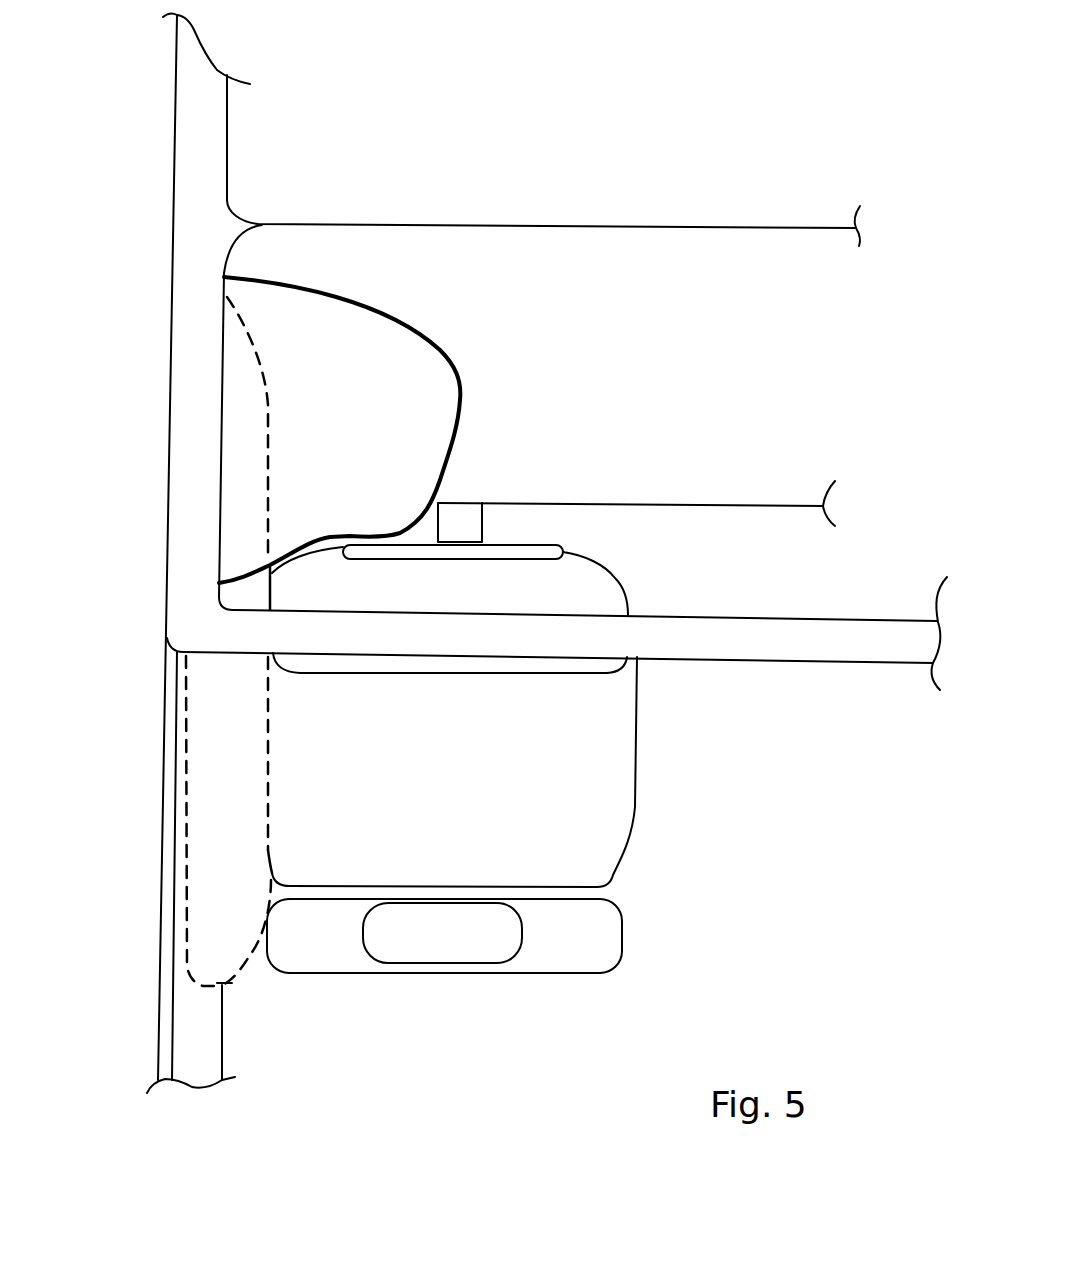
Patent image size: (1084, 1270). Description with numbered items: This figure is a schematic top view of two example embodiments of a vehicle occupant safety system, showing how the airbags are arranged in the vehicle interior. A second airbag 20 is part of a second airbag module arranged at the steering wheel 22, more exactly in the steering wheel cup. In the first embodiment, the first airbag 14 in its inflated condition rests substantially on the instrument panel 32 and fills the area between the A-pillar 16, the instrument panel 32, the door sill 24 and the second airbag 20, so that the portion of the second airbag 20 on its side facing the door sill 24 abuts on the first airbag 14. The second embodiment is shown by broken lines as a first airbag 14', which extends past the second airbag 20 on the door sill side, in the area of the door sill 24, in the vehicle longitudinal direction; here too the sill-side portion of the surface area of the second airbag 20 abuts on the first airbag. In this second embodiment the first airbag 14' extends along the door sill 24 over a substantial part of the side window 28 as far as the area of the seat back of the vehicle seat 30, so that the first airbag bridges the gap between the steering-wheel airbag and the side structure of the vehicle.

The first airbag 14 is at (373, 430).
The first airbag 14' is at (271, 678).
The A-pillar 16 is at (192, 487).
The second airbag 20 is at (592, 597).
The steering wheel 22 is at (527, 550).
The door sill 24 is at (190, 1012).
The side window 28 is at (167, 1037).
The vehicle seat 30 is at (610, 822).
The instrument panel 32 is at (743, 475).